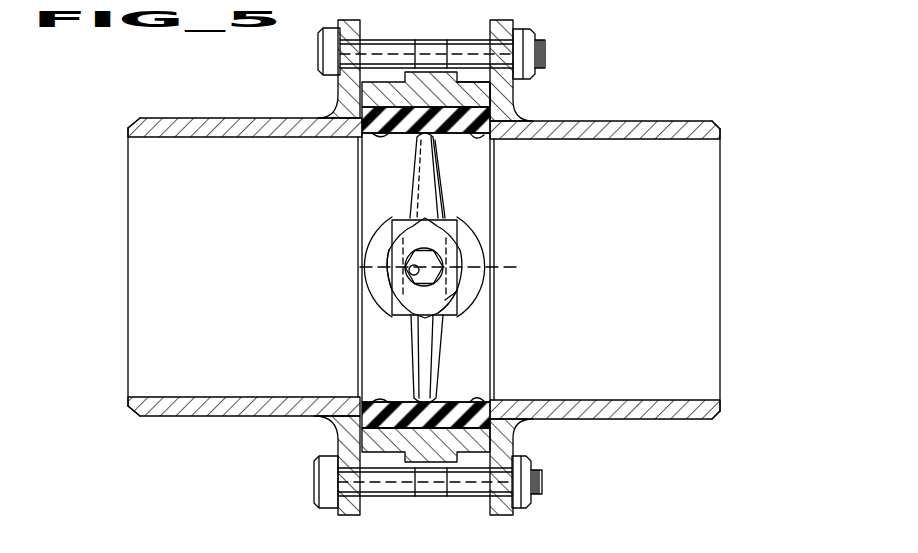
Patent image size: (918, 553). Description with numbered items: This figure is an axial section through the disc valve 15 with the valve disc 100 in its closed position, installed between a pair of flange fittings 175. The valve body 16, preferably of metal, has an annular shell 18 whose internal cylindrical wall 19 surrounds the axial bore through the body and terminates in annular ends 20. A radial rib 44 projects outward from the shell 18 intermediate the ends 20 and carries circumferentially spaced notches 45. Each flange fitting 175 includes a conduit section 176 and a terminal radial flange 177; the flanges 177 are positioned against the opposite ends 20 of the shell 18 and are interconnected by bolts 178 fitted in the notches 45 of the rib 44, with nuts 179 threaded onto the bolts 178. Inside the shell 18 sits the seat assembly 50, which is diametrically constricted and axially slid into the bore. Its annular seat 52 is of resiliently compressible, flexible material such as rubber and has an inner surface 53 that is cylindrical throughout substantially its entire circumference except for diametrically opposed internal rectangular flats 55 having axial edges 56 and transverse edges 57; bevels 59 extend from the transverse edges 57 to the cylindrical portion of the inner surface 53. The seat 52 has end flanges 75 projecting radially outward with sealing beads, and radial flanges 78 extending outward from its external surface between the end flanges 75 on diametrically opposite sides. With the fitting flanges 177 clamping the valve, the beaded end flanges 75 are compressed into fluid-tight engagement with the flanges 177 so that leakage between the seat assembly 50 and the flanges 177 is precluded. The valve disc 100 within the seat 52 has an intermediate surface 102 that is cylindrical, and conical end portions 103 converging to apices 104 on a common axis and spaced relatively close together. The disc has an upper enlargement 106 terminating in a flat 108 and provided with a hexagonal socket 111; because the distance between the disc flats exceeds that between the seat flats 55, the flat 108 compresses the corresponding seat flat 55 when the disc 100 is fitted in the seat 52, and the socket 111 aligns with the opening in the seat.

The disc valve 15 is at (497, 338).
The valve body 16 is at (465, 82).
The annular shell 18 is at (482, 88).
The internal cylindrical wall 19 is at (360, 108).
The annular ends 20 is at (338, 80).
The radial rib 44 is at (440, 62).
The notches 45 is at (420, 73).
The seat assembly 50 is at (390, 397).
The annular seat 52 is at (380, 134).
The inner surface 53 is at (387, 139).
The internal rectangular flats 55 is at (450, 300).
The axial edges 56 is at (447, 308).
The transverse edges 57 is at (460, 223).
The bevels 59 is at (377, 238).
The end flanges 75 is at (337, 113).
The radial flanges 78 is at (401, 401).
The valve disc 100 is at (413, 321).
The intermediate surface 102 is at (423, 172).
The conical end portions 103 is at (417, 203).
The apices 104 is at (413, 266).
The upper enlargement 106 is at (393, 289).
The flat 108 is at (463, 253).
The hexagonal socket 111 is at (411, 270).
The flange fittings 175 is at (178, 118).
The conduit section 176 is at (203, 361).
The terminal radial flange 177 is at (318, 36).
The bolts 178 is at (543, 44).
The nuts 179 is at (527, 63).